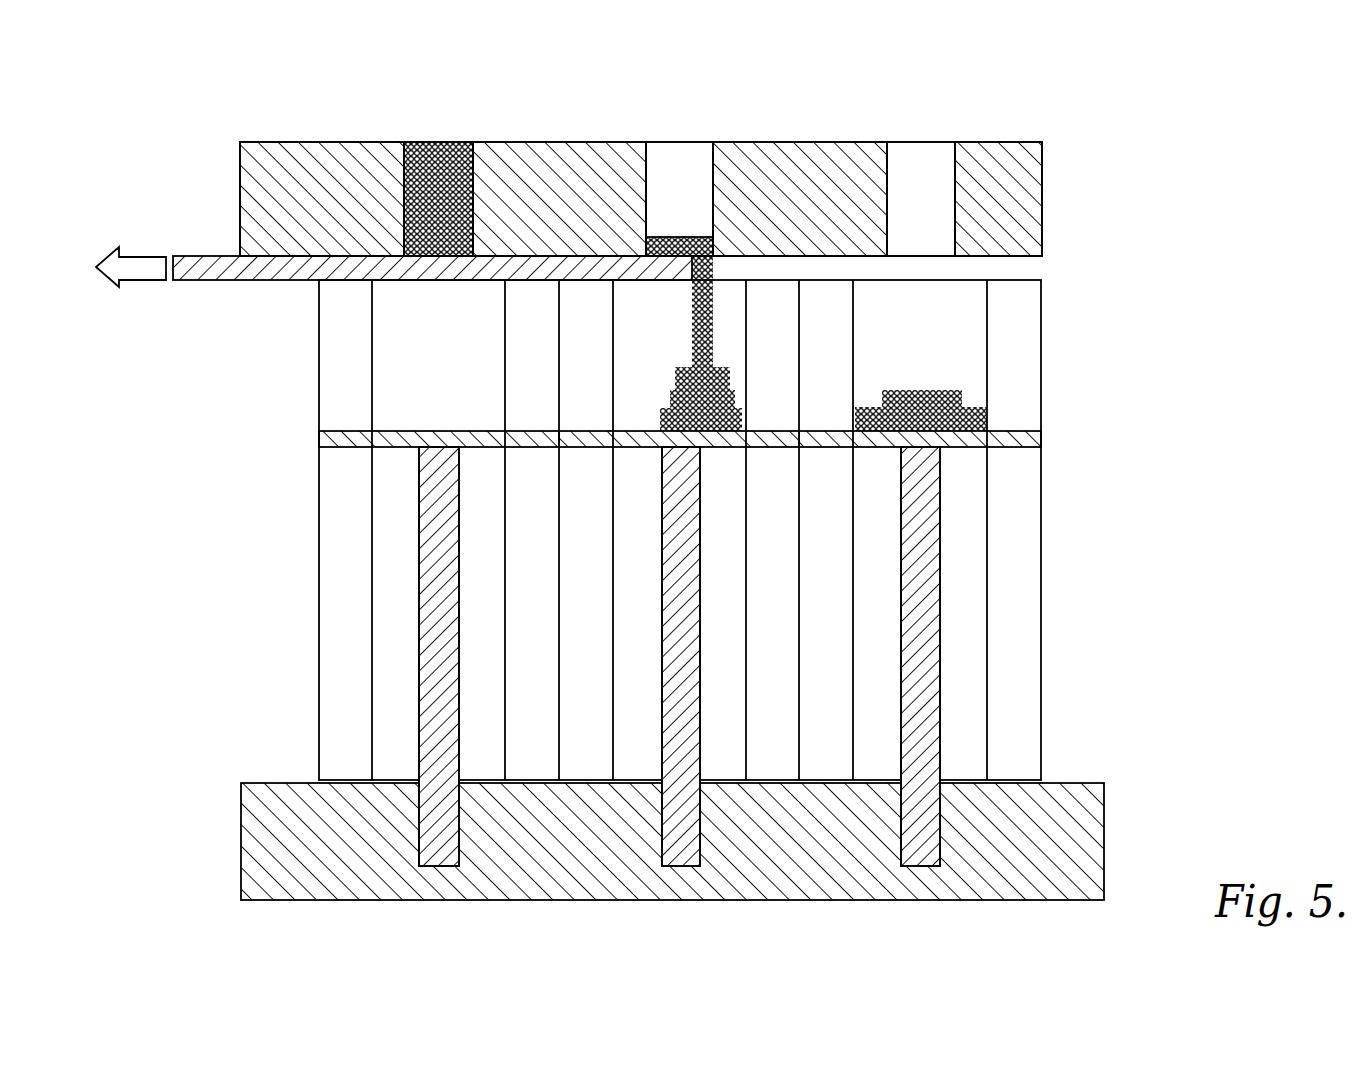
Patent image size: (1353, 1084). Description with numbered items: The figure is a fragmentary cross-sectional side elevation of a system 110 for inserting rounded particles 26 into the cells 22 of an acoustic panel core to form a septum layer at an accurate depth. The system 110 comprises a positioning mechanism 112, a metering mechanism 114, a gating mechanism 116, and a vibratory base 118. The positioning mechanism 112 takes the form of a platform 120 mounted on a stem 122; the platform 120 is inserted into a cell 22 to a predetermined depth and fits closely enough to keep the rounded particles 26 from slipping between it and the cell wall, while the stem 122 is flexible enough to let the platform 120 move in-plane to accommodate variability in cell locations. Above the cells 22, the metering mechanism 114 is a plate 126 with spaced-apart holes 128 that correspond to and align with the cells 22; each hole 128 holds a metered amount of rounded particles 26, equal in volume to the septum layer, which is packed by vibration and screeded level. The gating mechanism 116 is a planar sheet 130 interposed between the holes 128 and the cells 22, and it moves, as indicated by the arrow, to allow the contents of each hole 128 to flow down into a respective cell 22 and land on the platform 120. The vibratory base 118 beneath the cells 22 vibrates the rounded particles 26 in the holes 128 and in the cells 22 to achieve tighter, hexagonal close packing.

The cell 22 is at (942, 324).
The rounded particles 26 is at (958, 390).
The system 110 is at (247, 552).
The positioning mechanism 112 is at (713, 530).
The metering mechanism 114 is at (711, 155).
The gating mechanism 116 is at (177, 299).
The vibratory base 118 is at (257, 825).
The platform 120 is at (1053, 440).
The stem 122 is at (947, 685).
The plate 126 is at (812, 153).
The hole 128 is at (672, 178).
The planar sheet 130 is at (288, 282).